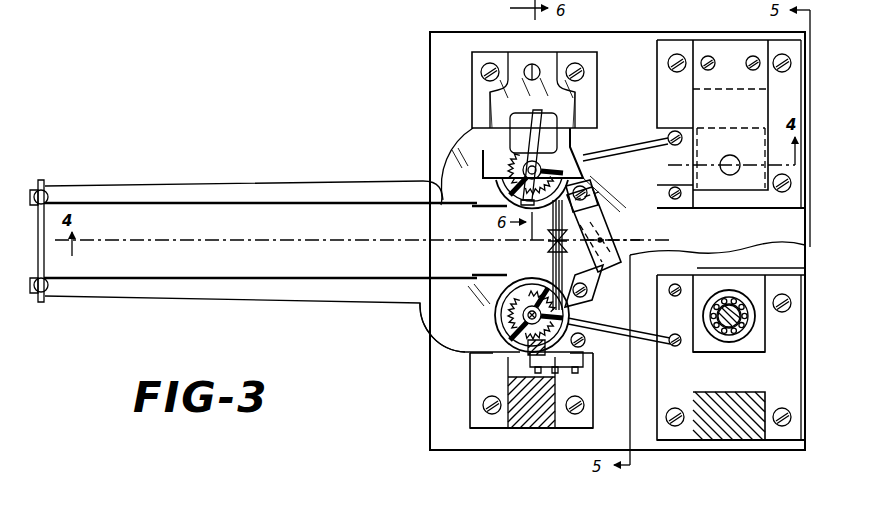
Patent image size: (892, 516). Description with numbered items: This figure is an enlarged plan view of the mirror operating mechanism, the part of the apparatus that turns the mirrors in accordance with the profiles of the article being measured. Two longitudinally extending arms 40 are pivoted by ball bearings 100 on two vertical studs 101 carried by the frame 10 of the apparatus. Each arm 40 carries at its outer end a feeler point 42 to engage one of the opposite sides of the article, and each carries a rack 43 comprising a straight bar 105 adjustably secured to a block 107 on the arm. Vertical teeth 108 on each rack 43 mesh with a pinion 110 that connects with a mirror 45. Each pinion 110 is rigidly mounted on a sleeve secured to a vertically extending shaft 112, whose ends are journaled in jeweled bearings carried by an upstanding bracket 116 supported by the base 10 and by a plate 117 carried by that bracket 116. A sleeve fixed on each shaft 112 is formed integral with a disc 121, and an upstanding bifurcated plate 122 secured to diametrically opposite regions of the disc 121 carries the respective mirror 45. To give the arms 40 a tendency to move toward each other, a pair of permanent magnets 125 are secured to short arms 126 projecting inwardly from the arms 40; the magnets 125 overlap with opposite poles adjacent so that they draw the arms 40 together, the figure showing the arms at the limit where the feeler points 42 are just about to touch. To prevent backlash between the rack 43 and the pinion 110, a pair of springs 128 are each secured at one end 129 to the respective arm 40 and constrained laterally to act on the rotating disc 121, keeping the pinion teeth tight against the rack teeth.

The frame 10 is at (771, 443).
The arms 40 is at (231, 182).
The feeler point 42 is at (42, 250).
The rack 43 is at (556, 261).
The mirror 45 is at (540, 156).
The ball bearings 100 is at (737, 305).
The vertical studs 101 is at (744, 147).
The straight bars 105 is at (563, 373).
The blocks 107 is at (585, 372).
The vertical teeth 108 is at (577, 305).
The pinions 110 is at (508, 140).
The vertically extending shaft 112 is at (513, 165).
The upstanding brackets 116 is at (478, 59).
The plates 117 is at (498, 95).
The discs 121 is at (505, 190).
The upstanding bifurcated plate 122 is at (513, 185).
The permanent magnets 125 is at (598, 230).
The short arms 126 is at (598, 185).
The springs 128 is at (621, 147).
The spring end 129 is at (675, 131).